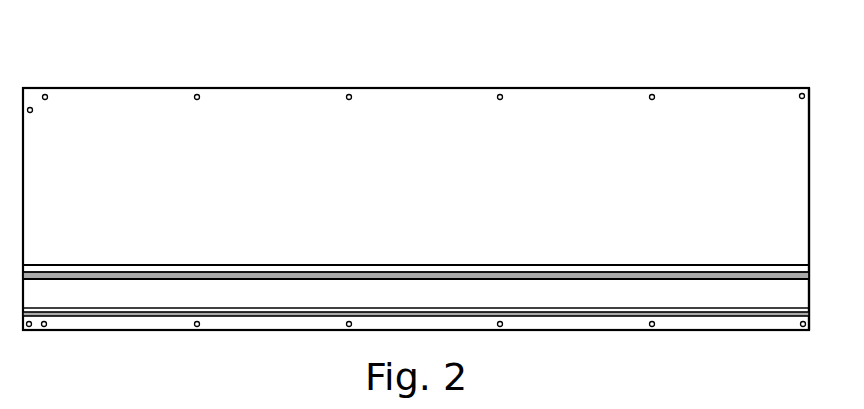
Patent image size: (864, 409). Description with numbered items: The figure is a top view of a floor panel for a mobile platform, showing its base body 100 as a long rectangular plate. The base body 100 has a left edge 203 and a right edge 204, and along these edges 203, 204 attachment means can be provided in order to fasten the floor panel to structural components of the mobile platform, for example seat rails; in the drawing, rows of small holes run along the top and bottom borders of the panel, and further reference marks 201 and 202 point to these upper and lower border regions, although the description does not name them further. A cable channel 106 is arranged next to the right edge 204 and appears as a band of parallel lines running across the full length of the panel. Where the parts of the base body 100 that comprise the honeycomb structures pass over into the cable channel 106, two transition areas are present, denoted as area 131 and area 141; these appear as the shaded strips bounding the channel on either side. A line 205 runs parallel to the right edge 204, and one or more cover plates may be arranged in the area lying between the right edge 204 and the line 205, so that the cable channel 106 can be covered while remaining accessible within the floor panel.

The base body 100 is at (565, 73).
The cable channel 106 is at (148, 297).
The transition area 131 is at (520, 272).
The transition area 141 is at (607, 316).
The top edge 201 is at (199, 92).
The bottom edge 202 is at (197, 327).
The left edge 203 is at (720, 88).
The right edge 204 is at (748, 331).
The line 205 is at (680, 265).